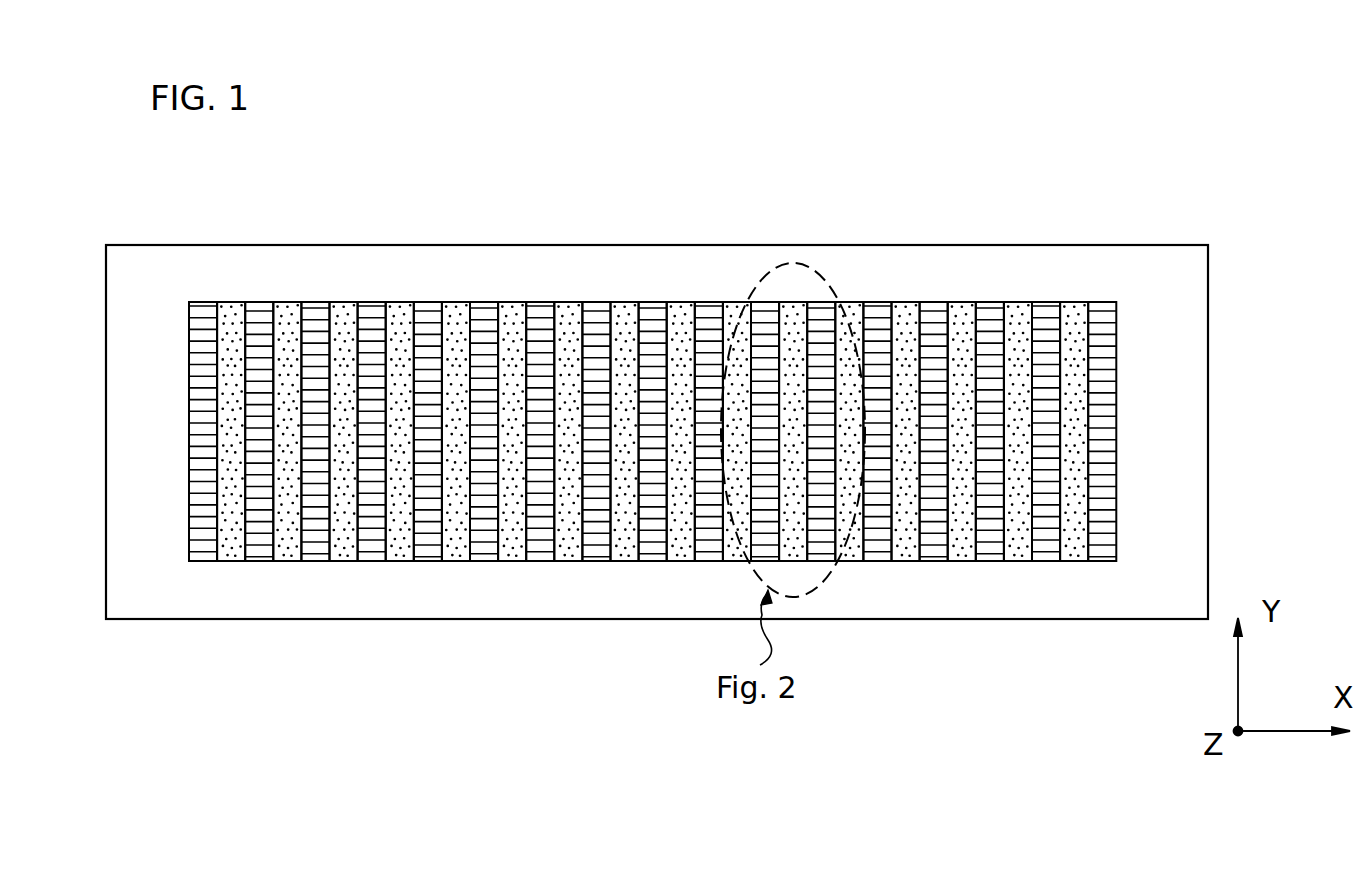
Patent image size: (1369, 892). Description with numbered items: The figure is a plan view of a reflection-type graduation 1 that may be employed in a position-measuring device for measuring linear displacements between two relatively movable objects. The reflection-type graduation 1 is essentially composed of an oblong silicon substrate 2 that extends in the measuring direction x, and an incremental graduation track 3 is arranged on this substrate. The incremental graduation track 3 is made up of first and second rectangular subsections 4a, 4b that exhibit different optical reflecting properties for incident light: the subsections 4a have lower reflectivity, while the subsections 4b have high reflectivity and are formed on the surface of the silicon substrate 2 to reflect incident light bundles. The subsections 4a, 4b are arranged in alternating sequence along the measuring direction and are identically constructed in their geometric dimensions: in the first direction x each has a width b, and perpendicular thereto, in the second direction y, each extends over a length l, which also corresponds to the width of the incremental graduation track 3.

The reflection-type graduation 1 is at (657, 499).
The silicon substrate 2 is at (972, 600).
The incremental graduation track 3 is at (608, 500).
The first rectangular subsections 4a is at (203, 548).
The second rectangular subsections 4b is at (233, 548).
The width b is at (1031, 562).
The length l is at (1122, 302).